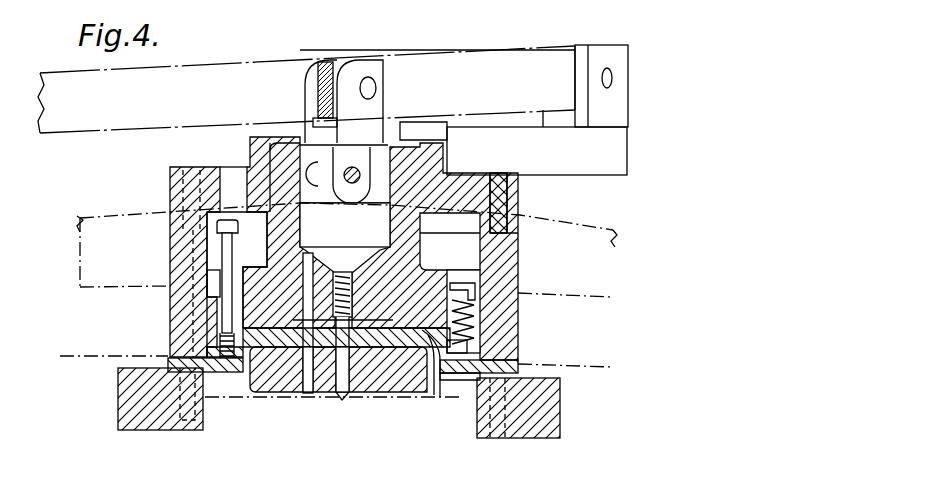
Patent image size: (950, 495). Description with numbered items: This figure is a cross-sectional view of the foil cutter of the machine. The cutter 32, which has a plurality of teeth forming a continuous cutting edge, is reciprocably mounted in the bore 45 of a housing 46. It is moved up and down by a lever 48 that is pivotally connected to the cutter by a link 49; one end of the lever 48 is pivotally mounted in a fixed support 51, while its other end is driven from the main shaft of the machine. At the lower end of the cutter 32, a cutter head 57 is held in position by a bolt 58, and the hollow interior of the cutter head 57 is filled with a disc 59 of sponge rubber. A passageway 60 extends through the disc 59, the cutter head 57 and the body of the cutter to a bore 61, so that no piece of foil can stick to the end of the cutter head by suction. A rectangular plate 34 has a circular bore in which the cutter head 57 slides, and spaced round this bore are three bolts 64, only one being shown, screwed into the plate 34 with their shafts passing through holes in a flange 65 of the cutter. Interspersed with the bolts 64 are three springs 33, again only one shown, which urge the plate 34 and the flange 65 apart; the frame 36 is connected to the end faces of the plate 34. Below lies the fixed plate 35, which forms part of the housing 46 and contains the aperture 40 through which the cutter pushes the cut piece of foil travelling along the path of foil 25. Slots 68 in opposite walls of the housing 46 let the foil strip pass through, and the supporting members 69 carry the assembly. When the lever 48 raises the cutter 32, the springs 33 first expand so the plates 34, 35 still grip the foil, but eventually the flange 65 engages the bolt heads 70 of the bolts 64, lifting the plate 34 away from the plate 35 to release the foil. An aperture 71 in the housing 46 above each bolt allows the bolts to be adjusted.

The path of foil 25 is at (112, 357).
The cutter 32 is at (285, 158).
The springs 33 is at (470, 310).
The plate 34 is at (466, 346).
The plate 35 is at (462, 380).
The frame 36 is at (583, 238).
The aperture 40 is at (441, 373).
The bore 45 is at (272, 142).
The housing 46 is at (166, 192).
The lever 48 is at (458, 68).
The link 49 is at (377, 107).
The fixed support 51 is at (618, 55).
The cutter head 57 is at (250, 362).
The bolt 58 is at (340, 385).
The disc 59 is at (266, 393).
The passageway 60 is at (303, 393).
The bore 61 is at (298, 226).
The bolts 64 is at (221, 315).
The flange 65 is at (212, 282).
The slots 68 is at (172, 358).
The supporting members 69 is at (120, 398).
The bolt heads 70 is at (235, 228).
The aperture 71 is at (222, 167).